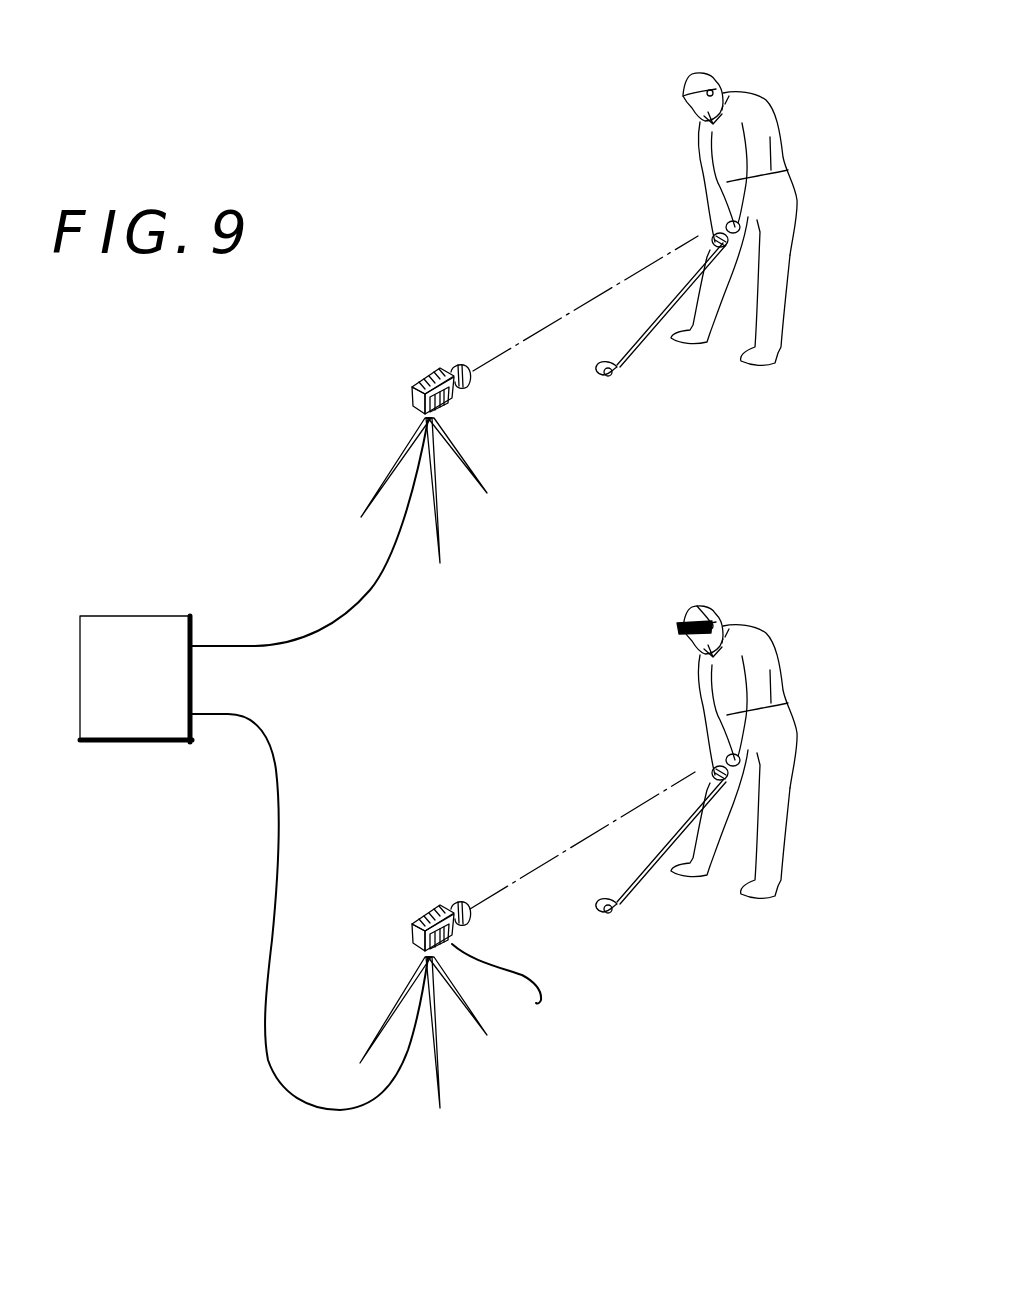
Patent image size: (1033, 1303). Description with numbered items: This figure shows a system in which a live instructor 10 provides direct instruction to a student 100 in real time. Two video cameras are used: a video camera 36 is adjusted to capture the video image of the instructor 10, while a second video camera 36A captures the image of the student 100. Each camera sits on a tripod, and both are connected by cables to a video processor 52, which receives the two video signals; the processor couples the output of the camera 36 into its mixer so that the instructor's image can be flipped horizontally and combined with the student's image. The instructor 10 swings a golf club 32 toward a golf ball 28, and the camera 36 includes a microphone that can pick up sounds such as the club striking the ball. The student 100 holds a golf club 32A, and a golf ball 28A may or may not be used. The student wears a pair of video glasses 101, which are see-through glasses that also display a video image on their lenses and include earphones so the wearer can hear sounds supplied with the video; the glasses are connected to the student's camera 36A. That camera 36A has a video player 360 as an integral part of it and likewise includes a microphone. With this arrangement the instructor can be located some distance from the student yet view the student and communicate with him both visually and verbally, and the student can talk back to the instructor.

The live instructor 10 is at (786, 106).
The video camera 36 is at (423, 380).
The golf club 32 is at (648, 320).
The golf ball 28 is at (608, 378).
The video processor 52 is at (117, 616).
The student 100 is at (790, 646).
The video glasses 101 is at (698, 606).
The video camera 36A is at (421, 915).
The golf club 32A is at (648, 860).
The golf ball 28A is at (606, 914).
The video player 360 is at (516, 989).